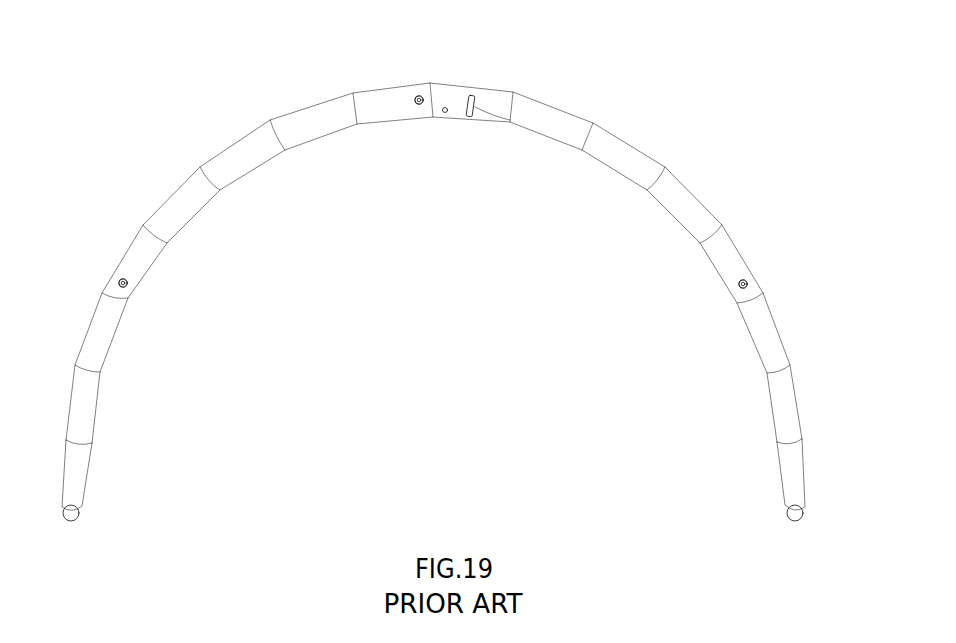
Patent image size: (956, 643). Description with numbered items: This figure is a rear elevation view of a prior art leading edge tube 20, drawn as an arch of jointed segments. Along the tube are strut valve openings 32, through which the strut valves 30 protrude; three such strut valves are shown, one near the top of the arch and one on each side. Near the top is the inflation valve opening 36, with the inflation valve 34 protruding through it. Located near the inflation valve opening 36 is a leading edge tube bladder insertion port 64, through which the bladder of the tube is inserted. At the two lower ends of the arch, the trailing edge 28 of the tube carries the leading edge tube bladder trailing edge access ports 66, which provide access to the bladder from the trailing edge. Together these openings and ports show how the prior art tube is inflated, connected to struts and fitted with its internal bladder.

The leading edge tube 20 is at (541, 101).
The trailing edge 28 is at (86, 525).
The strut valve 30 is at (417, 98).
The strut valve opening 32 is at (418, 104).
The inflation valve 34 is at (446, 113).
The inflation valve opening 36 is at (448, 108).
The leading edge tube bladder insertion port 64 is at (510, 120).
The leading edge tube bladder trailing edge access port 66 is at (83, 511).